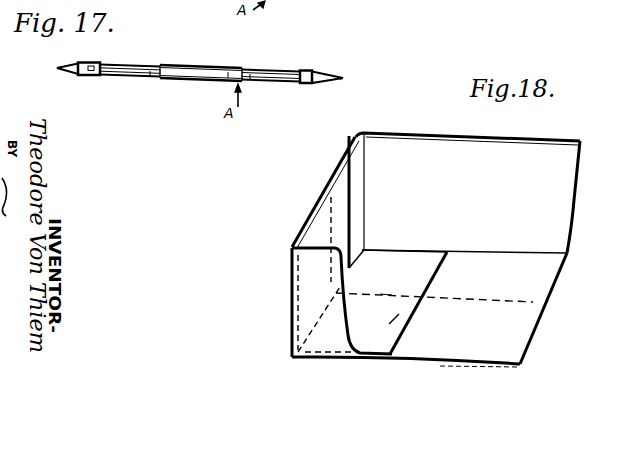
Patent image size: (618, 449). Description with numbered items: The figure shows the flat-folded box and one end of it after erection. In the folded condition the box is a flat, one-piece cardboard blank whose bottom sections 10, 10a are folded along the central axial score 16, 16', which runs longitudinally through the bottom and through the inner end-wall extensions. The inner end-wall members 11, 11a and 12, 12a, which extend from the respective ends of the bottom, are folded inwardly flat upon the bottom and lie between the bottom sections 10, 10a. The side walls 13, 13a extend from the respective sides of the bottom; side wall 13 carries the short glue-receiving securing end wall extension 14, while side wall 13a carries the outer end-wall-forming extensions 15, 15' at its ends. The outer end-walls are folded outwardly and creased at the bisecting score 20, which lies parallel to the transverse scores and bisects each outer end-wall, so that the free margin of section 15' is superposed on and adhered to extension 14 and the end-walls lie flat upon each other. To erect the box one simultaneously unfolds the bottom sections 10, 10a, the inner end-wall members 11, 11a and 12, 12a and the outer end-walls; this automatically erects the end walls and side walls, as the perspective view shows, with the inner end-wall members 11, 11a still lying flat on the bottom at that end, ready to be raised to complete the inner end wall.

In FIG. 18, the box bottom section 10 is at (429, 307).
In FIG. 18, the box bottom section 10a is at (479, 344).
In FIG. 17, the inner end-wall member 11 is at (166, 65).
In FIG. 18, the inner end-wall member 11 is at (405, 251).
In FIG. 17, the inner end-wall member 11a is at (152, 78).
In FIG. 18, the inner end-wall member 11a is at (394, 321).
In FIG. 17, the inner end-wall member 12 is at (241, 71).
In FIG. 17, the inner end-wall member 12a is at (251, 82).
In FIG. 17, the side wall 13 is at (211, 66).
In FIG. 18, the side wall 13 is at (468, 193).
In FIG. 17, the side wall 13a is at (228, 81).
In FIG. 18, the side wall 13a is at (342, 302).
In FIG. 17, the securing end wall extension 14 is at (93, 77).
In FIG. 18, the securing end wall extension 14 is at (366, 194).
In FIG. 17, the outer end-wall-forming extension 15 is at (205, 83).
In FIG. 18, the outer end-wall-forming extension 15 is at (314, 192).
In FIG. 17, the outer end-wall section 15' is at (199, 61).
In FIG. 18, the outer end-wall section 15' is at (337, 151).
In FIG. 18, the central axial score 16 is at (439, 292).
In FIG. 18, the central axial score 16' is at (399, 282).
In FIG. 18, the bisecting score 20 is at (332, 206).